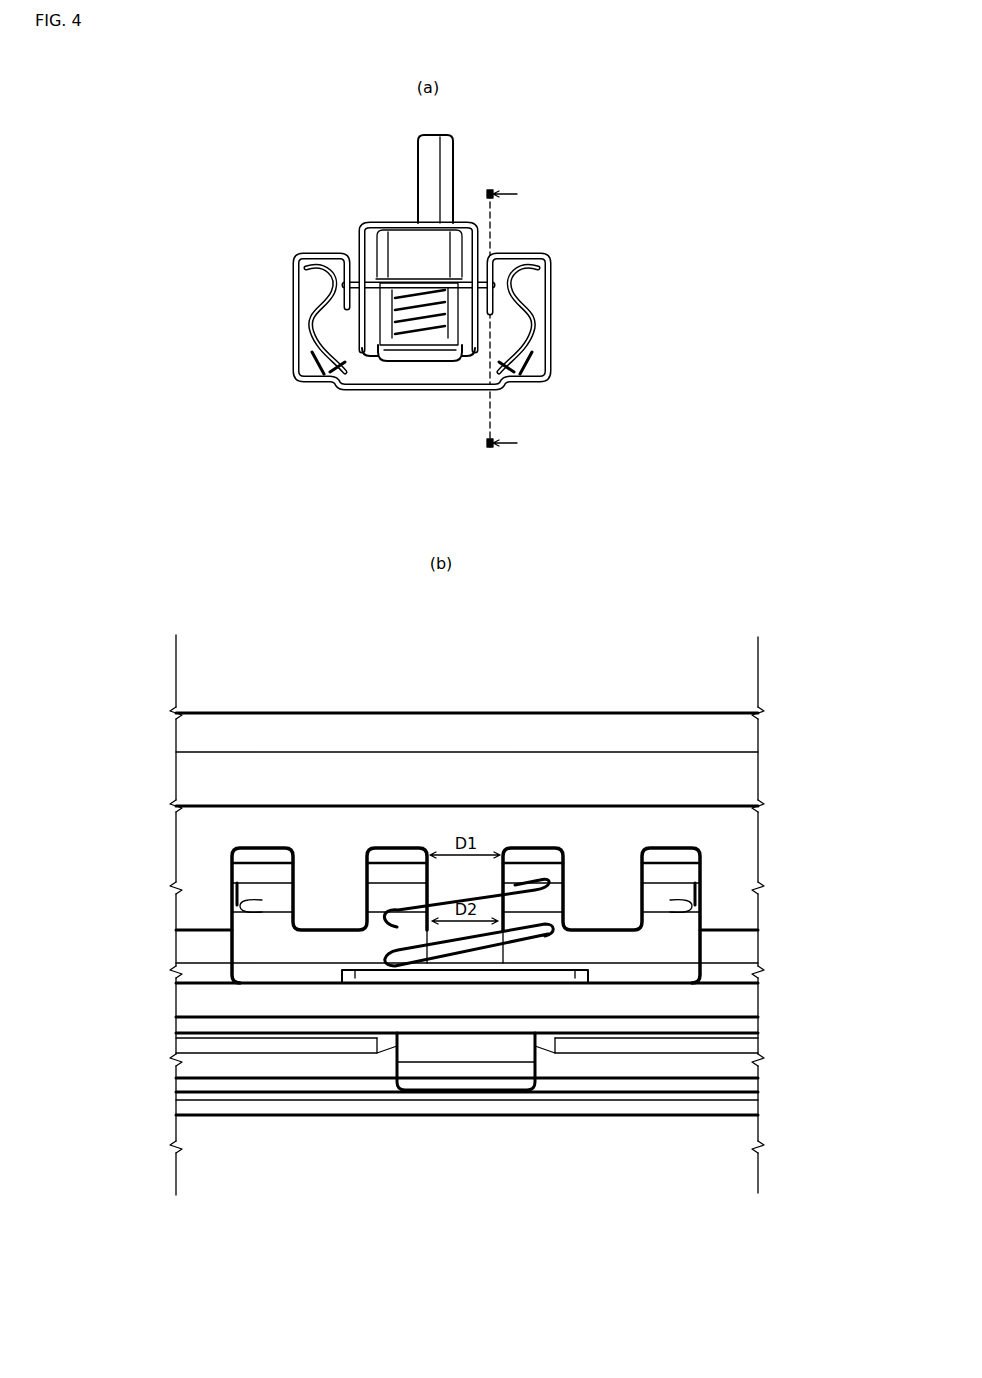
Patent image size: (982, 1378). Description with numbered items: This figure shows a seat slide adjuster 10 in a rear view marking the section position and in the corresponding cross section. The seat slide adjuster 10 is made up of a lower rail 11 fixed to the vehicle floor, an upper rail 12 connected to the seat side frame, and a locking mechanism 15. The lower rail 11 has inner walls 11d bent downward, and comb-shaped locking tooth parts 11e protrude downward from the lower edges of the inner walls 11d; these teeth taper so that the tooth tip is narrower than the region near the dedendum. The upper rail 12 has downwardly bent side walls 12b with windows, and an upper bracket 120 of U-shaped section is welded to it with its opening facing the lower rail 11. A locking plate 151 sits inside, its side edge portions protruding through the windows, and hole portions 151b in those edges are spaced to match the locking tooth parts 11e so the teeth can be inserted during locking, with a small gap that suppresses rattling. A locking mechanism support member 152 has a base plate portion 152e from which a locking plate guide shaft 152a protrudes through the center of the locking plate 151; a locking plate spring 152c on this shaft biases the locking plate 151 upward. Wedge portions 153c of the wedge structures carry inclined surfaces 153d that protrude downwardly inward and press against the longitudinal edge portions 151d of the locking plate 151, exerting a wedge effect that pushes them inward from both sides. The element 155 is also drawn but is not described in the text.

The seat slide adjuster 10 is at (300, 163).
The lower rail 11 is at (550, 345).
The inner wall 11d is at (745, 838).
The locking tooth part 11e is at (293, 926).
The upper rail 12 is at (381, 221).
The side wall 12b is at (186, 765).
The upper bracket 120 is at (402, 250).
The locking mechanism 15 is at (405, 360).
The locking plate 151 is at (530, 870).
The hole portion 151b is at (366, 858).
The longitudinal edge portion 151d is at (232, 857).
The locking mechanism support member 152 is at (603, 980).
The locking plate guide shaft 152a is at (490, 968).
The locking plate spring 152c is at (506, 968).
The base plate portion 152e is at (549, 975).
The wedge portion 153c is at (240, 905).
The inclined surface 153d is at (270, 913).
The shaft 155 is at (459, 150).